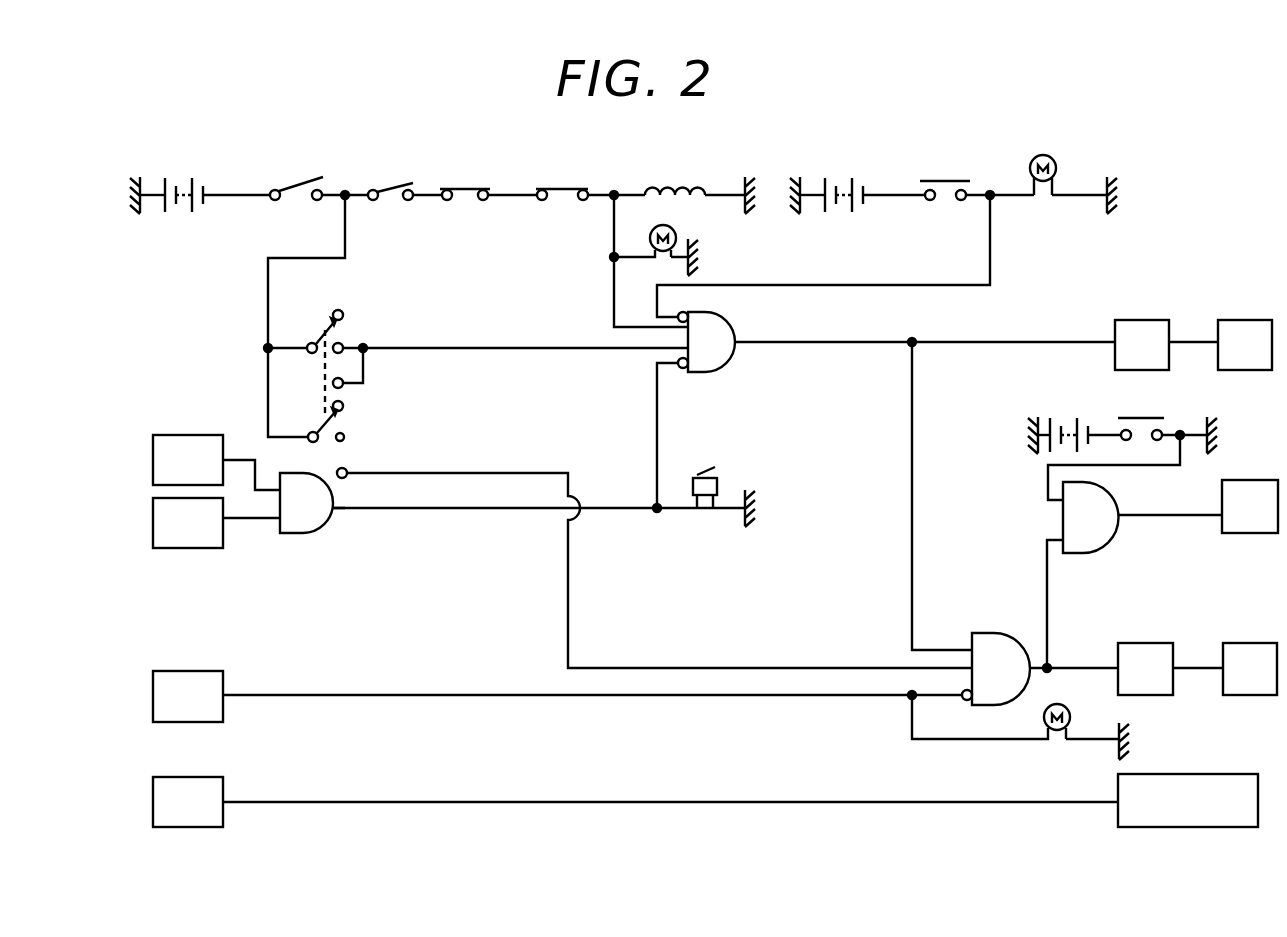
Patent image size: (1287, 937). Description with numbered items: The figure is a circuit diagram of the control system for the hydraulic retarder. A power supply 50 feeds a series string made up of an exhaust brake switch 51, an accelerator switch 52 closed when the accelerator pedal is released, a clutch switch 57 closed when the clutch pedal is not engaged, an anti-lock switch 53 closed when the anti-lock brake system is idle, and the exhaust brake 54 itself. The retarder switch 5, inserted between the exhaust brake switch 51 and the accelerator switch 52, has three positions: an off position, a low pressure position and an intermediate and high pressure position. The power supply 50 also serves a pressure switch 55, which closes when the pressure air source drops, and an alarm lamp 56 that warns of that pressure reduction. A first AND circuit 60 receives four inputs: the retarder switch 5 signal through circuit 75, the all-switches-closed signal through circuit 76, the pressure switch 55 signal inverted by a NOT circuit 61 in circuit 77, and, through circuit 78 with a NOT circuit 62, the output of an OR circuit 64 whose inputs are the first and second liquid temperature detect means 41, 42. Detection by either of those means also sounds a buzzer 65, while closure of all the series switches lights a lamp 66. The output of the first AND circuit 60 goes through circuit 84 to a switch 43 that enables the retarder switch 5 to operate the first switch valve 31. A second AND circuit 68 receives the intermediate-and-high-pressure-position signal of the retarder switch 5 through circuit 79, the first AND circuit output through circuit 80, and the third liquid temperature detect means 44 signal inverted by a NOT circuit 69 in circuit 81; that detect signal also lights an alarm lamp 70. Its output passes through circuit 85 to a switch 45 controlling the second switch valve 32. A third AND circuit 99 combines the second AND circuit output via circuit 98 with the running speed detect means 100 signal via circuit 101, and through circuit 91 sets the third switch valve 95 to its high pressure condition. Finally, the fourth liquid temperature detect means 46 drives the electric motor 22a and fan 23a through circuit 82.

The retarder switch 5 is at (312, 428).
The first switch valve 31 is at (1245, 345).
The second switch valve 32 is at (1250, 669).
The first liquid temperature detect means 41 is at (216, 462).
The second liquid temperature detect means 42 is at (216, 523).
The switch 43 is at (1166, 345).
The third liquid temperature detect means 44 is at (188, 696).
The switch 45 is at (1170, 669).
The fourth liquid temperature detect means 46 is at (188, 802).
The power supply 50 is at (198, 183).
The exhaust brake switch 51 is at (298, 183).
The accelerator switch 52 is at (387, 183).
The anti-lock switch 53 is at (550, 184).
The exhaust brake 54 is at (670, 184).
The pressure switch 55 is at (943, 183).
The alarm lamp 56 is at (1057, 166).
The clutch switch 57 is at (462, 184).
The first AND circuit 60 is at (730, 362).
The NOT circuit 61 is at (690, 306).
The NOT circuit 62 is at (683, 370).
The OR circuit 64 is at (322, 533).
The buzzer 65 is at (716, 480).
The lamp 66 is at (678, 232).
The second AND circuit 68 is at (988, 633).
The NOT circuit 69 is at (962, 700).
The alarm lamp 70 is at (1071, 717).
The circuit 75 is at (485, 345).
The circuit 76 is at (612, 287).
The circuit 77 is at (815, 285).
The circuit 78 is at (600, 505).
The circuit 79 is at (570, 605).
The circuit 80 is at (915, 455).
The circuit 81 is at (628, 698).
The circuit 82 is at (835, 805).
The circuit 84 is at (955, 345).
The circuit 85 is at (1070, 665).
The circuit 91 is at (1168, 515).
The third switch valve 95 is at (1250, 506).
The circuit 98 is at (1045, 560).
The third AND circuit 99 is at (1110, 543).
The running speed detect means 100 is at (1146, 408).
The circuit 101 is at (1112, 468).
The electric motor 22a is at (1188, 800).
The fan 23a is at (1188, 800).